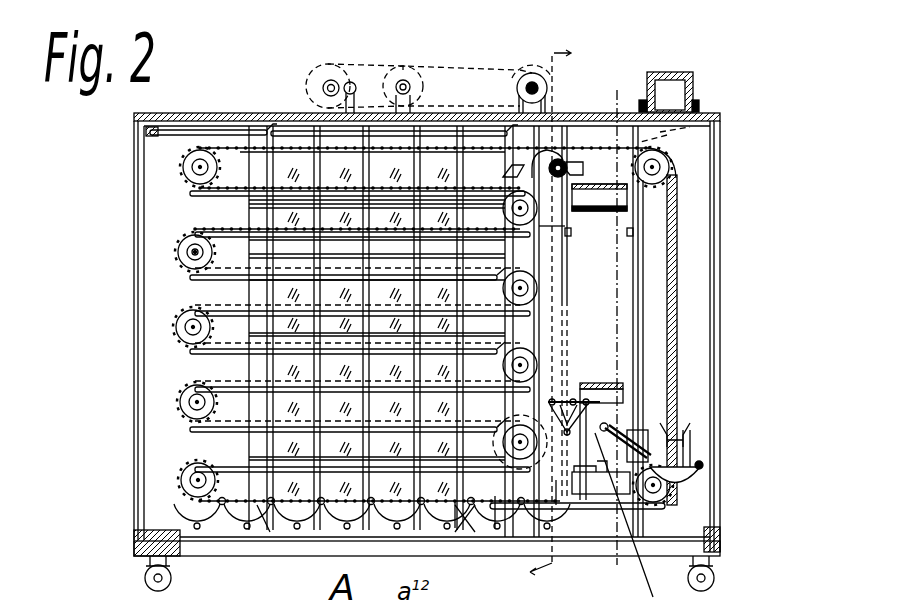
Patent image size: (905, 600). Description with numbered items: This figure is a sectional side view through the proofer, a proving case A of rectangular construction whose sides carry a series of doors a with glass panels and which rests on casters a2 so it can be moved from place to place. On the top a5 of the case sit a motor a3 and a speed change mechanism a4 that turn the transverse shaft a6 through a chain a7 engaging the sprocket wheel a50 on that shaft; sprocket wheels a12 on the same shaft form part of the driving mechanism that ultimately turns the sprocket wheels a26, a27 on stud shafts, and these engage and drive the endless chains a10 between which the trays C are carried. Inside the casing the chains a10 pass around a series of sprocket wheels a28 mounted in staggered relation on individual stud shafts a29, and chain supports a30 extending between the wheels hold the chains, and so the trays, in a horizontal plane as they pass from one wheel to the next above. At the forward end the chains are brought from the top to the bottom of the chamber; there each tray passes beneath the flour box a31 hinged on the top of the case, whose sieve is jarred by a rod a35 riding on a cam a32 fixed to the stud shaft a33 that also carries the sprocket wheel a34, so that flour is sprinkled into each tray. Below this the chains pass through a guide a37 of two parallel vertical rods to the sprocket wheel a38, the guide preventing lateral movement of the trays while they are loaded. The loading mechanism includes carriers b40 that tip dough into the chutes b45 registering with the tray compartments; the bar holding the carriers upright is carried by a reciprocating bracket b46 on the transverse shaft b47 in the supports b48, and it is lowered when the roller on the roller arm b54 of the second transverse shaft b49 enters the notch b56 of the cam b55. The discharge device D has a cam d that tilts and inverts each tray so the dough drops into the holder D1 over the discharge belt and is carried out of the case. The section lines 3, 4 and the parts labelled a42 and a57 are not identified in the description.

The proving case A is at (163, 455).
The top of the case a5 is at (205, 112).
The bracket a42 is at (146, 133).
The doors a is at (135, 200).
The endless chains a10 is at (178, 250).
The stud shafts a29 is at (195, 255).
The chain supports a30 is at (210, 278).
The sprocket wheels a28 is at (190, 393).
The sprocket wheels a12 is at (232, 548).
The sprocket wheel a50 is at (372, 549).
The transverse shaft a6 is at (528, 76).
The motor a3 is at (312, 80).
The speed change mechanism a4 is at (425, 64).
The chain a7 is at (430, 72).
The section line 3- 3 is at (534, 307).
The section line 4- 4 is at (616, 325).
The holder D1 is at (533, 167).
The cam d is at (535, 163).
The discharge device D is at (603, 183).
The flour box a31 is at (687, 77).
The housing feet a57 is at (697, 101).
The rod a35 is at (690, 126).
The cam a32 is at (667, 134).
The stud shaft a33 is at (662, 166).
The sprocket wheel a34 is at (678, 180).
The sprocket wheel a26 is at (530, 223).
The sprocket wheel a27 is at (562, 398).
The second transverse shaft b49 is at (576, 402).
The supports b48 is at (587, 392).
The transverse shaft b47 is at (569, 418).
The reciprocating bracket b46 is at (585, 428).
The chutes b45 is at (662, 440).
The guide a37 is at (688, 452).
The sprocket wheel a38 is at (668, 498).
The trays C is at (683, 478).
The notch b56 is at (455, 505).
The cam b55 is at (495, 500).
The roller arm b54 is at (556, 505).
The carriers b40 is at (602, 386).
The casters a2 is at (716, 578).